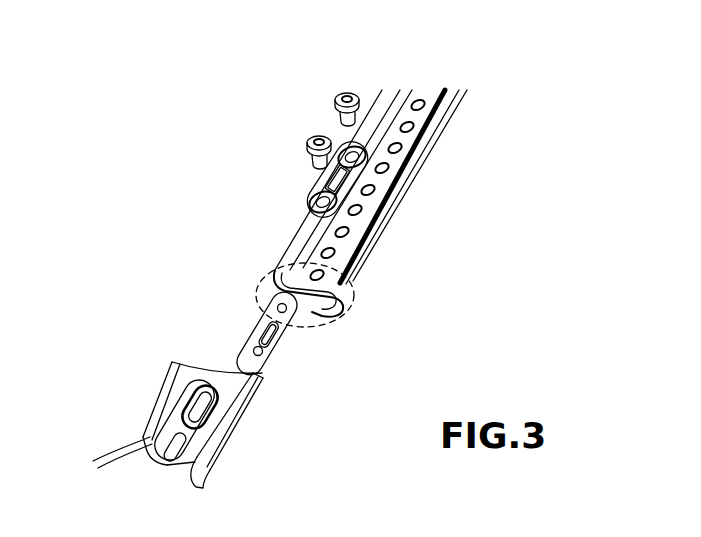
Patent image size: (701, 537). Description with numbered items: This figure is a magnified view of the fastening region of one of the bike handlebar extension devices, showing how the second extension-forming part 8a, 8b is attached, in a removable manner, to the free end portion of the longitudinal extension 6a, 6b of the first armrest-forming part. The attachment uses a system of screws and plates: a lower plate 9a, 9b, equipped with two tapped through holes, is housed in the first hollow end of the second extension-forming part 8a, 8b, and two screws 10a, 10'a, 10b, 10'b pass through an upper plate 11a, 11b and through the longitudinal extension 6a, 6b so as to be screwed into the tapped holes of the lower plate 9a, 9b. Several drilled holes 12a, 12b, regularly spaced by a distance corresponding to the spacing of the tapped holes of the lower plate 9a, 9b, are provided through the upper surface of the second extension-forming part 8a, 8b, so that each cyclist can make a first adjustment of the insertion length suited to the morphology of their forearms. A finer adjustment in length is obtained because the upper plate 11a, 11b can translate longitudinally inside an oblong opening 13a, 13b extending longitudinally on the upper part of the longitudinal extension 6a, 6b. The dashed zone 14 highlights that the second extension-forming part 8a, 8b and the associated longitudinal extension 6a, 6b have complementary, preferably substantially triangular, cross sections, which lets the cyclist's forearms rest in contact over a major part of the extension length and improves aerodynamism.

The longitudinal extension 6a is at (168, 369).
The longitudinal extension 6b is at (169, 401).
The second extension-forming part 8a is at (425, 145).
The second extension-forming part 8b is at (388, 187).
The lower plate 9a is at (272, 355).
The lower plate 9b is at (297, 353).
The screw 10a is at (310, 155).
The screw 10b is at (269, 136).
The screw 10'a is at (297, 81).
The screw 10'b is at (297, 81).
The upper plate 11a is at (313, 200).
The upper plate 11b is at (289, 189).
The drilled holes 12a is at (374, 243).
The drilled holes 12b is at (378, 194).
The opening 13a is at (150, 415).
The opening 13b is at (105, 422).
The zone 14 is at (347, 308).